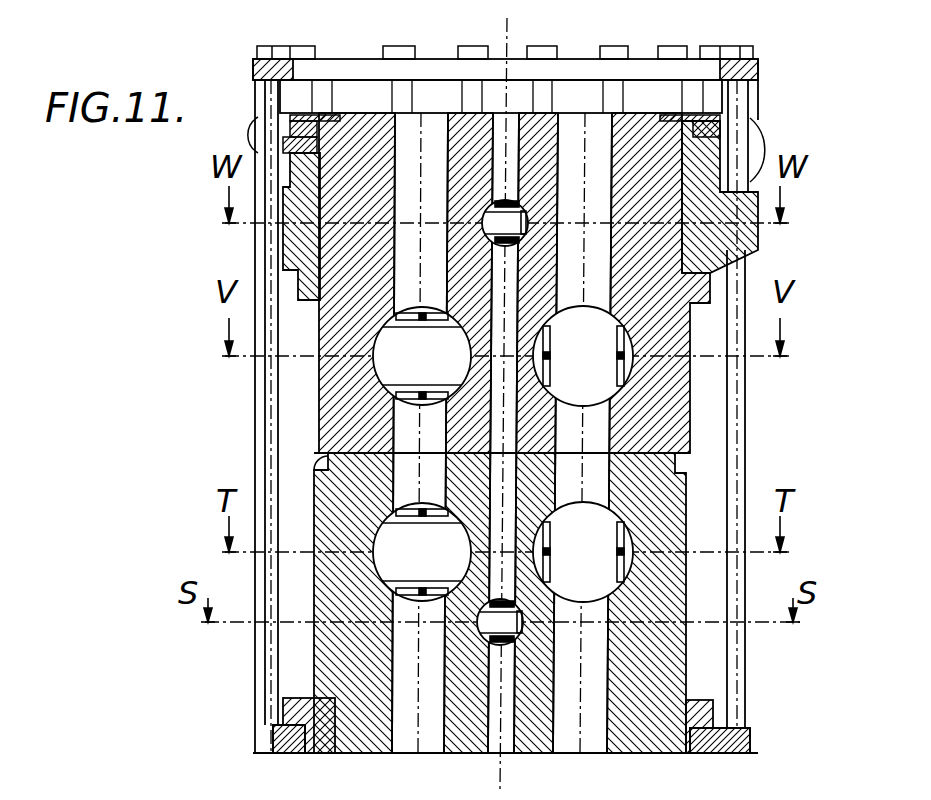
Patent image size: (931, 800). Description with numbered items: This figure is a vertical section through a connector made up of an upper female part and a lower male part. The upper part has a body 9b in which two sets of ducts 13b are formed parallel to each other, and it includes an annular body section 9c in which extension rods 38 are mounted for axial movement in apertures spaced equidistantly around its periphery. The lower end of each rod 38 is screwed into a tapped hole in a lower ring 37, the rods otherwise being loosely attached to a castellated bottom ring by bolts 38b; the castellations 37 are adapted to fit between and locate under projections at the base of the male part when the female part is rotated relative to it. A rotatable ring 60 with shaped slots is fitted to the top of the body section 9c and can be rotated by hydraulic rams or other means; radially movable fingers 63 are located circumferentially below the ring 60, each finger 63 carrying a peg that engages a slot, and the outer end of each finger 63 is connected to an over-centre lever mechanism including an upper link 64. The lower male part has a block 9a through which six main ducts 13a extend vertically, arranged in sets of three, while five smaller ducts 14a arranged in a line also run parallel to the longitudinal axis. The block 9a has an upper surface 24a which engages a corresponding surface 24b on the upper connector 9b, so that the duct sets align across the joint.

The bolts 38b is at (330, 62).
The extension rods 38 is at (408, 93).
The smaller ducts 14a is at (512, 125).
The ducts 13b is at (568, 147).
The main bores or ducts 13a is at (397, 737).
The rotatable ring 60 is at (752, 64).
The upper link 64 is at (752, 118).
The radially movable fingers 63 is at (766, 154).
The annular body section 9c is at (738, 240).
The body of upper female connector 9b is at (328, 424).
The body section of lower male connector 9a is at (332, 664).
The upper surface 24a is at (318, 478).
The corresponding surface 24b is at (653, 452).
The lower ring / castellations 37 is at (290, 752).